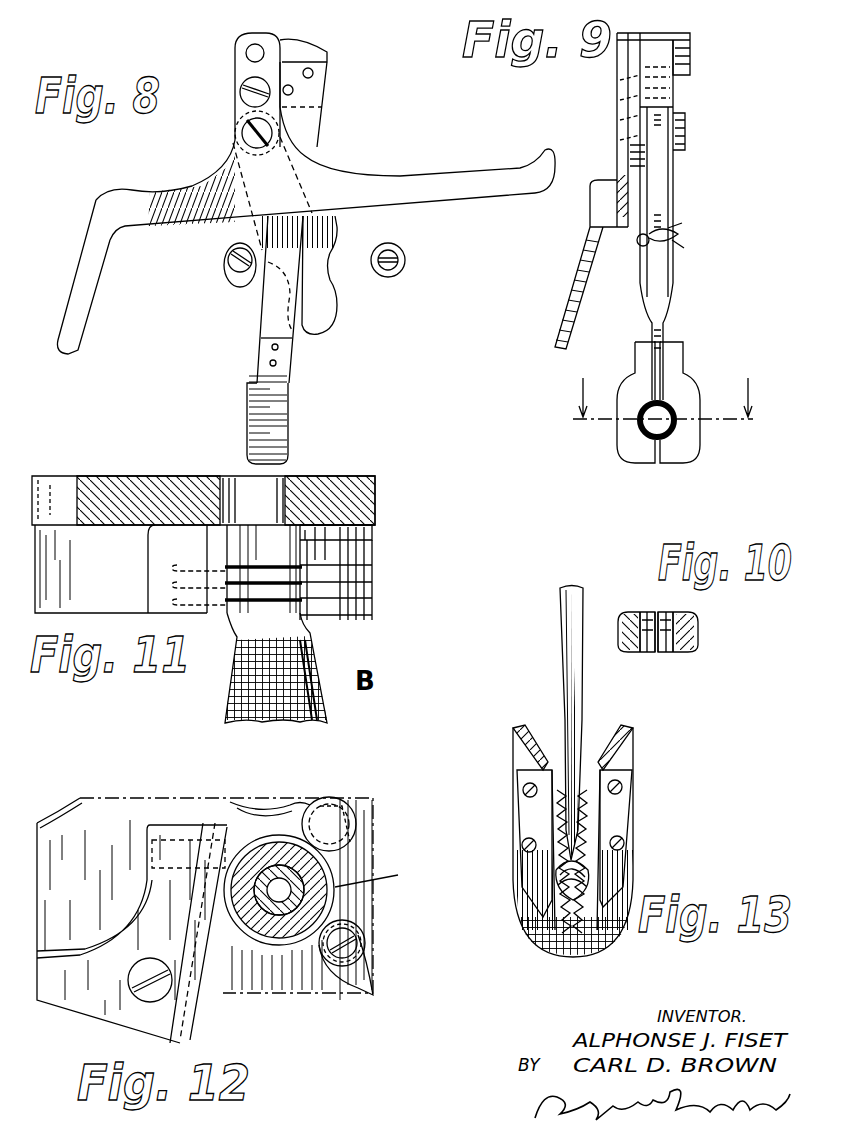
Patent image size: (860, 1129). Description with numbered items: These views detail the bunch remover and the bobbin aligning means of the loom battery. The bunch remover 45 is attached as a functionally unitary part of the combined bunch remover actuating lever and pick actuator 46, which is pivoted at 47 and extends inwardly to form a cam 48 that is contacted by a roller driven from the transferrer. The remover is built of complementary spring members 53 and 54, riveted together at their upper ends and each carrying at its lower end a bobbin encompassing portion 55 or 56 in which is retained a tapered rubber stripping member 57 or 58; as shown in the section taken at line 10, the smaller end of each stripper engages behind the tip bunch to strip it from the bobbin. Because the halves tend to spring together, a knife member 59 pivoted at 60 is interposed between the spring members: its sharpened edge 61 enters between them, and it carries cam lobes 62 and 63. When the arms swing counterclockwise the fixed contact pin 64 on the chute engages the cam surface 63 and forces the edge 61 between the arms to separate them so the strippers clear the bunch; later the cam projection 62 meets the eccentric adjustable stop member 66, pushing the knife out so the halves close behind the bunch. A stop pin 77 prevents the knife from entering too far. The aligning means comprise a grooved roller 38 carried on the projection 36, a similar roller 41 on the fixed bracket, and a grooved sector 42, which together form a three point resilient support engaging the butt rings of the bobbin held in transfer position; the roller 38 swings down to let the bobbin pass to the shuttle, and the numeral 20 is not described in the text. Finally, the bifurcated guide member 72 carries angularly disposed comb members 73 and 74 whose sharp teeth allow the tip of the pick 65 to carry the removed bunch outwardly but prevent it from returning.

In FIG. 9, the section line 10 is at (667, 384).
In FIG. 12, the frame 20 is at (133, 808).
In FIG. 12, the horizontally extending projection 36 is at (366, 990).
In FIG. 11, the roller 38 is at (364, 583).
In FIG. 12, the roller 38 is at (365, 935).
In FIG. 11, the second roller 41 is at (347, 547).
In FIG. 12, the second roller 41 is at (342, 823).
In FIG. 11, the grooved sector 42 is at (183, 614).
In FIG. 12, the grooved sector 42 is at (183, 1010).
In FIG. 8, the bunch remover 45 is at (266, 320).
In FIG. 9, the bunch remover 45 is at (687, 281).
In FIG. 8, the combined bunch remover actuating lever and pick actuator 46 is at (203, 233).
In FIG. 8, the pivot 47 is at (260, 53).
In FIG. 8, the cam 48 is at (113, 203).
In FIG. 9, the spring member 53 is at (637, 240).
In FIG. 9, the spring member 54 is at (672, 200).
In FIG. 8, the bobbin encompassing portion 55 is at (290, 405).
In FIG. 9, the bobbin encompassing portion 55 is at (632, 392).
In FIG. 10, the bobbin encompassing portion 55 is at (622, 640).
In FIG. 9, the bobbin encompassing portion 56 is at (680, 390).
In FIG. 10, the bobbin encompassing portion 56 is at (700, 644).
In FIG. 10, the stripping member 57 is at (642, 614).
In FIG. 10, the stripping member 58 is at (696, 623).
In FIG. 8, the knife member 59 is at (337, 312).
In FIG. 8, the pivot 60 is at (252, 136).
In FIG. 8, the sharpened edge 61 is at (290, 313).
In FIG. 8, the cam lobe 62 is at (266, 255).
In FIG. 8, the cam lobe 63 is at (325, 287).
In FIG. 8, the contact roll or pin 64 is at (405, 261).
In FIG. 13, the pick 65 is at (565, 673).
In FIG. 8, the adjustable stop member 66 is at (241, 272).
In FIG. 13, the bifurcated guide member 72 is at (548, 948).
In FIG. 13, the comb member 73 is at (533, 828).
In FIG. 13, the comb member 74 is at (615, 813).
In FIG. 9, the stop pin 77 is at (650, 240).